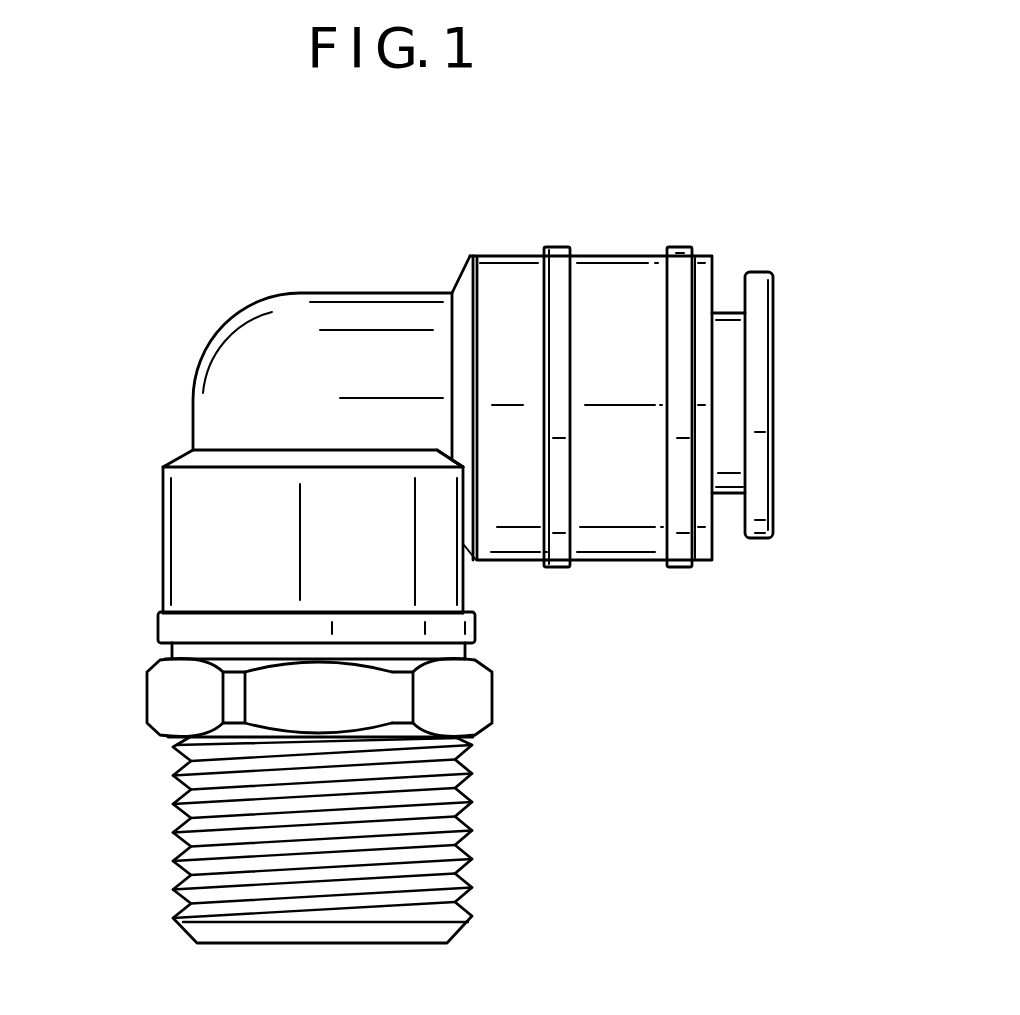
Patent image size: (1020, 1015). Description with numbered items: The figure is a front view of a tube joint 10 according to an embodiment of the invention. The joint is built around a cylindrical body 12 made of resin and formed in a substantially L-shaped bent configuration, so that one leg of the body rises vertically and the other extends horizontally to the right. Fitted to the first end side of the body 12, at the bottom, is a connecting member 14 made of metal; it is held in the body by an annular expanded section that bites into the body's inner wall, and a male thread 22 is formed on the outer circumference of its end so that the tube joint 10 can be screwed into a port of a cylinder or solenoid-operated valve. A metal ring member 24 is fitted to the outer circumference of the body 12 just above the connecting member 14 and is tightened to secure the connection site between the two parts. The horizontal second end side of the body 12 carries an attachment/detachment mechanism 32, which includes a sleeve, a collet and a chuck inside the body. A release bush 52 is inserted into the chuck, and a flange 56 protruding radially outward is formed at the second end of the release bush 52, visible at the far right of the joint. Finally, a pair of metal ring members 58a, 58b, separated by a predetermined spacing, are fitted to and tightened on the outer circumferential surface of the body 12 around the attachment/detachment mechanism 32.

The tube joint 10 is at (694, 178).
The body 12 is at (223, 324).
The connecting member 14 is at (175, 692).
The male thread 22 is at (200, 805).
The ring member 24 is at (173, 619).
The attachment/detachment mechanism 32 is at (774, 271).
The release bush 52 is at (730, 410).
The flange 56 is at (765, 505).
The ring member 58a is at (561, 556).
The ring member 58b is at (687, 562).